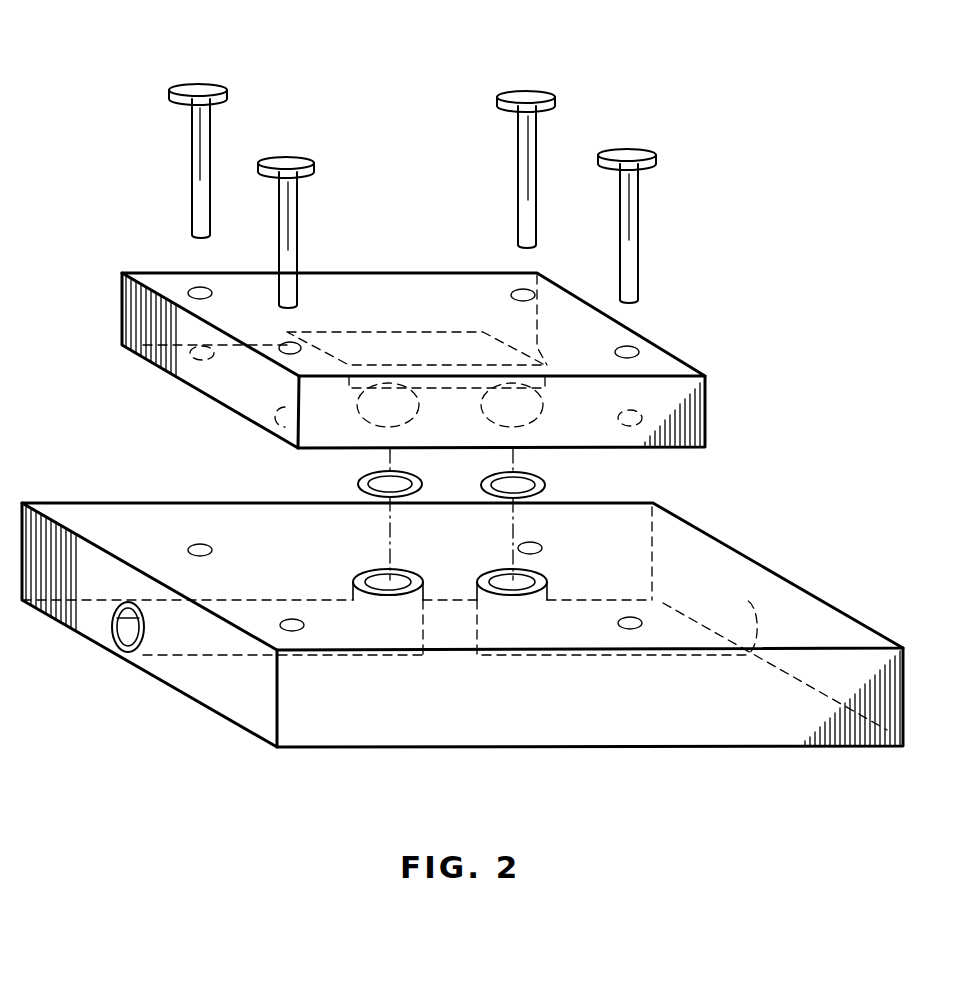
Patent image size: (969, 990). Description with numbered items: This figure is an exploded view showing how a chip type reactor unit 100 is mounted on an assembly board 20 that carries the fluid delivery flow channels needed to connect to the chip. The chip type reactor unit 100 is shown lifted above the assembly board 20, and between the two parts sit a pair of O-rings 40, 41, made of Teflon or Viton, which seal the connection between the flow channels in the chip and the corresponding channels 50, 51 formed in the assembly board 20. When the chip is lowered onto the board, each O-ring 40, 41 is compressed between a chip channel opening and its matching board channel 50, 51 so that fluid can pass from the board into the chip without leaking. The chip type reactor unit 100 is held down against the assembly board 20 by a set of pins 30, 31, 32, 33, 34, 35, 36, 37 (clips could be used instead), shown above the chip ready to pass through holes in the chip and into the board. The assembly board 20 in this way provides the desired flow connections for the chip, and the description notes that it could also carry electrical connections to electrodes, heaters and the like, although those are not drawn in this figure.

The assembly board 20 is at (297, 748).
The chip type reactor unit 100 is at (712, 408).
The pin 30 is at (227, 102).
The pin 31 is at (313, 160).
The pin 32 is at (552, 95).
The pin 33 is at (655, 158).
The pin 34 is at (197, 152).
The pin 35 is at (297, 250).
The pin 36 is at (518, 193).
The pin 37 is at (637, 250).
The O-ring 40 is at (358, 488).
The O-ring 41 is at (542, 484).
The channel 50 is at (160, 622).
The channel 51 is at (683, 600).